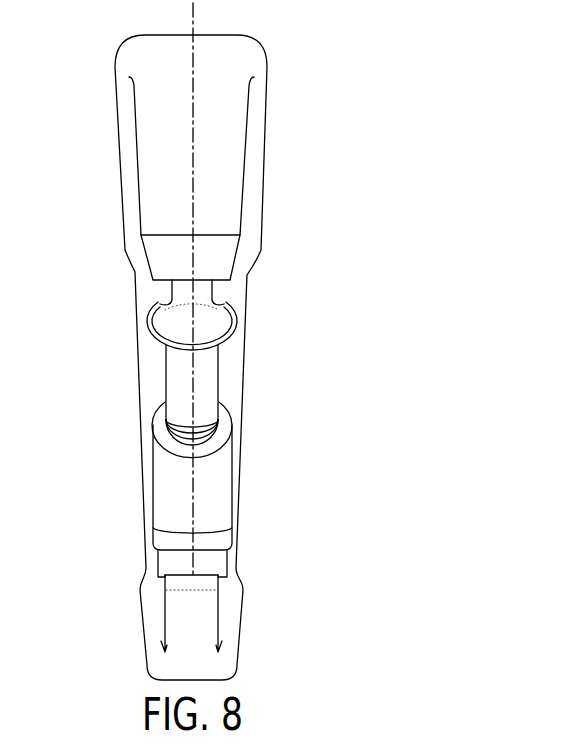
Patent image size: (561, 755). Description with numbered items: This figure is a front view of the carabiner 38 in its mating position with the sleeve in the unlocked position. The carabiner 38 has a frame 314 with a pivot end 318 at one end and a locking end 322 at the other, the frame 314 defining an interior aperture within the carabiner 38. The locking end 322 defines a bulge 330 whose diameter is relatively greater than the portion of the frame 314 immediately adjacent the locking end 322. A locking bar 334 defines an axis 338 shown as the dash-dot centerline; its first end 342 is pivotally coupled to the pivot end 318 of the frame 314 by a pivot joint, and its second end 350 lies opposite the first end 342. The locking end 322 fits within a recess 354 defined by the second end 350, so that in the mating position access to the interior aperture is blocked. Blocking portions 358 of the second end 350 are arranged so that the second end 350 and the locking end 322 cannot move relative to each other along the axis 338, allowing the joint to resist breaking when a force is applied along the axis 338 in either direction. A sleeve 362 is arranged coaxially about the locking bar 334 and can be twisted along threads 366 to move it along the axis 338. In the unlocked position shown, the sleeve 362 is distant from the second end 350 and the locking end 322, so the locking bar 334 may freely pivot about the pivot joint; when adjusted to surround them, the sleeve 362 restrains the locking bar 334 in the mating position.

The carabiner 38 is at (316, 126).
The frame 314 is at (117, 117).
The pivot end 318 is at (182, 583).
The locking end 322 is at (178, 329).
The bulge 330 is at (208, 320).
The locking bar 334 is at (180, 557).
The axis 338 is at (200, 23).
The first end 342 is at (213, 566).
The second end 350 is at (177, 357).
The recess 354 is at (216, 332).
The blocking portions 358 is at (160, 303).
The sleeve 362 is at (213, 492).
The threads 366 is at (217, 428).